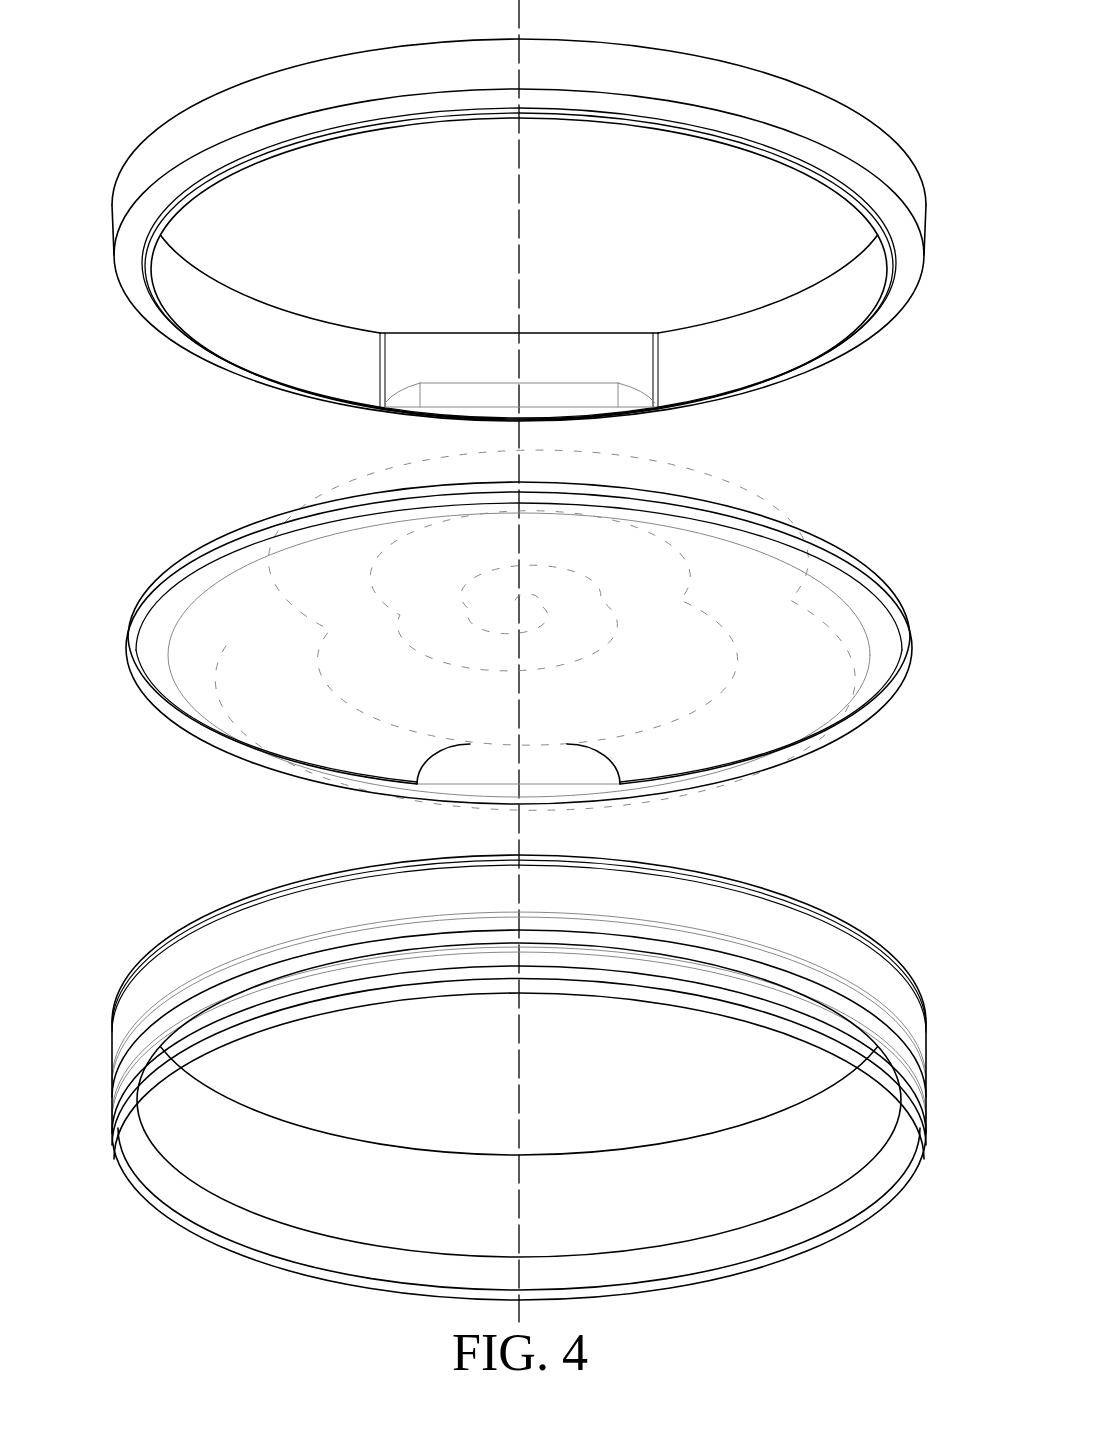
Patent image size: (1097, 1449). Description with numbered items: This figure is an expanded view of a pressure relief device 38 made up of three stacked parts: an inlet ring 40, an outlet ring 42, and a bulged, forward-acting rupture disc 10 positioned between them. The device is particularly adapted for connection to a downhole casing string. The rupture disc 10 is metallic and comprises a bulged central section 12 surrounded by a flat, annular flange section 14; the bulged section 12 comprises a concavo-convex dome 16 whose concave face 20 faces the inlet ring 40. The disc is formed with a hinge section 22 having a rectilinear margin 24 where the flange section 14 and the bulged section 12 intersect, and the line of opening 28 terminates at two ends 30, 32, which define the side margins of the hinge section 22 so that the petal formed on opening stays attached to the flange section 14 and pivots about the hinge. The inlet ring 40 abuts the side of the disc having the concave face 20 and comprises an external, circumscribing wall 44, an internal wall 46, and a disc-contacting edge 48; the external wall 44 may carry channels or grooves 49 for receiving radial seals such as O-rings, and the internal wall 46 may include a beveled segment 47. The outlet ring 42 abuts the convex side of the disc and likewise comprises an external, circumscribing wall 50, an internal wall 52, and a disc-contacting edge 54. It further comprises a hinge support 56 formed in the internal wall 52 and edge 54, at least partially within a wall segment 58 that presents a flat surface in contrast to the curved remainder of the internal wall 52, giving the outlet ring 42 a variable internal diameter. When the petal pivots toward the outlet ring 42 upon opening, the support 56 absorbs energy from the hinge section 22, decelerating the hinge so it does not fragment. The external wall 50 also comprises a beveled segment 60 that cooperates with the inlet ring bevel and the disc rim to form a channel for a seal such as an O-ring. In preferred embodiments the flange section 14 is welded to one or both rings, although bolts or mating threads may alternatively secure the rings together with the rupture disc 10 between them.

The rupture disc 10 is at (893, 549).
The bulged central section 12 is at (633, 551).
The flat, annular flange section 14 is at (148, 590).
The concavo-convex dome 16 is at (205, 695).
The concave face 20 is at (557, 560).
The hinge section 22 is at (593, 793).
The rectilinear margin 24 is at (452, 786).
The line of opening 28 is at (852, 703).
The end of line of opening 30 is at (445, 760).
The end of line of opening 32 is at (592, 760).
The pressure relief device 38 is at (101, 137).
The inlet ring 40 is at (106, 977).
The outlet ring 42 is at (837, 77).
The external, circumscribing wall 44 is at (818, 937).
The internal wall 46 is at (673, 1167).
The beveled segment 47 is at (233, 1222).
The disc-contacting edge 48 is at (207, 917).
The channels or grooves 49 is at (122, 1047).
The external, circumscribing wall 50 is at (213, 105).
The internal wall 52 is at (848, 305).
The disc-contacting edge 54 is at (213, 362).
The hinge support 56 is at (453, 400).
The wall segment 58 is at (588, 345).
The beveled segment 60 is at (127, 268).